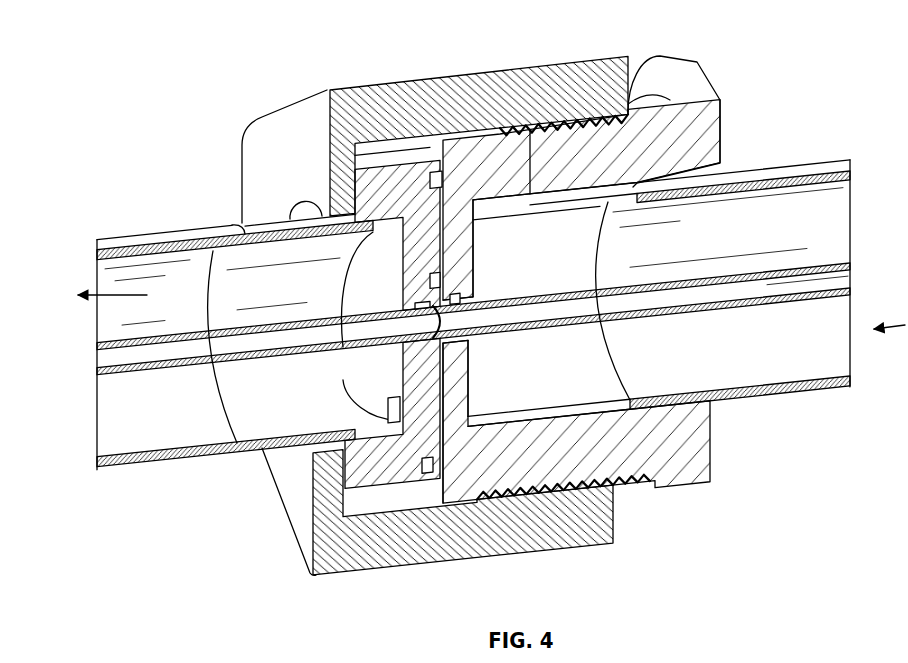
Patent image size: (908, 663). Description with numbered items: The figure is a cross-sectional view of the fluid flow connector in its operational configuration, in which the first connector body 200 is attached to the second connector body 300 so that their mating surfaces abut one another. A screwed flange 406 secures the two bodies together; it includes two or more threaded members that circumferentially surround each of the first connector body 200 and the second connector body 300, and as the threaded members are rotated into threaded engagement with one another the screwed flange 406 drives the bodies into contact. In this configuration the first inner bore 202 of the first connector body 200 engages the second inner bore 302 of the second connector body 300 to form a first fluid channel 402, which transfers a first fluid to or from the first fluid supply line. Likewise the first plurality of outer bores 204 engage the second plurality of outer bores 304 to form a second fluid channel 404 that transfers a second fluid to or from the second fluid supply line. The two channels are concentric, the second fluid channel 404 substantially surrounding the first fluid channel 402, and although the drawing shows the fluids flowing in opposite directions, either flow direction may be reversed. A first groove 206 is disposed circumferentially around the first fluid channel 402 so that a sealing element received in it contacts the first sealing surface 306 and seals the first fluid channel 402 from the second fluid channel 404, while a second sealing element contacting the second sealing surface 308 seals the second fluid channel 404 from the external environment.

The first connector body 200 is at (370, 204).
The first inner bore 202 is at (416, 325).
The first plurality of outer bores 204 is at (360, 268).
The first groove 206 is at (430, 170).
The second connector body 300 is at (481, 448).
The second inner bore 302 is at (460, 327).
The second plurality of outer bores 304 is at (488, 253).
The first sealing surface 306 is at (441, 376).
The second sealing surface 308 is at (434, 476).
The first fluid channel 402 is at (110, 362).
The second fluid channel 404 is at (776, 219).
The screwed flange 406 is at (520, 80).